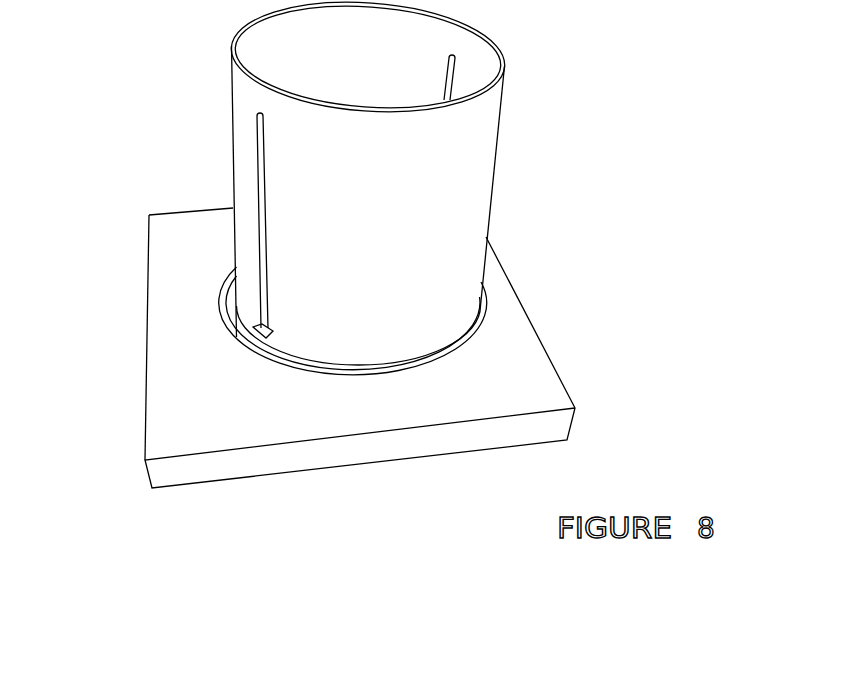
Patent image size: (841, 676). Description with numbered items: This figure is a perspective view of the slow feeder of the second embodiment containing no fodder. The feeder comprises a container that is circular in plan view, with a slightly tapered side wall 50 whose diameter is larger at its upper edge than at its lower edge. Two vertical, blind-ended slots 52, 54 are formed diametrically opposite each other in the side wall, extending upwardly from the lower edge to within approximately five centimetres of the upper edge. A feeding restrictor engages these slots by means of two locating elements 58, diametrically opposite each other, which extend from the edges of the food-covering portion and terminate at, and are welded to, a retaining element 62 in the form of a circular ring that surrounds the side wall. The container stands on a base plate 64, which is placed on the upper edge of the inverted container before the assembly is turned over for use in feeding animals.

The side wall 50 is at (245, 88).
The blind-ended slot 52 is at (247, 165).
The blind-ended slot 54 is at (453, 70).
The locating element 58 is at (233, 328).
The retaining element 62 is at (227, 276).
The base plate 64 is at (515, 358).